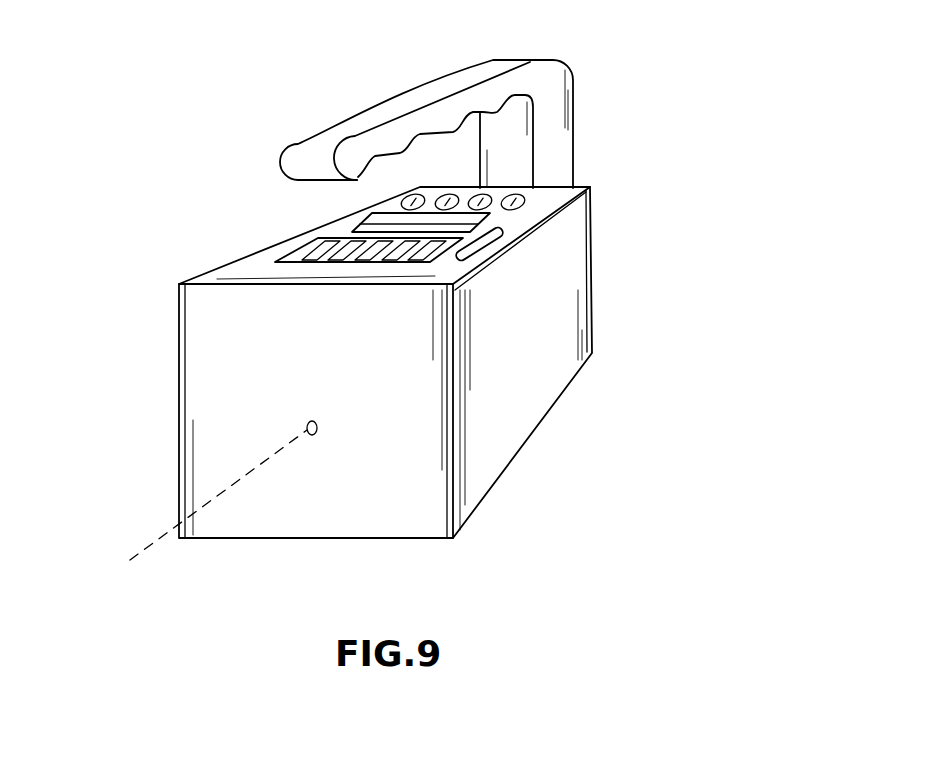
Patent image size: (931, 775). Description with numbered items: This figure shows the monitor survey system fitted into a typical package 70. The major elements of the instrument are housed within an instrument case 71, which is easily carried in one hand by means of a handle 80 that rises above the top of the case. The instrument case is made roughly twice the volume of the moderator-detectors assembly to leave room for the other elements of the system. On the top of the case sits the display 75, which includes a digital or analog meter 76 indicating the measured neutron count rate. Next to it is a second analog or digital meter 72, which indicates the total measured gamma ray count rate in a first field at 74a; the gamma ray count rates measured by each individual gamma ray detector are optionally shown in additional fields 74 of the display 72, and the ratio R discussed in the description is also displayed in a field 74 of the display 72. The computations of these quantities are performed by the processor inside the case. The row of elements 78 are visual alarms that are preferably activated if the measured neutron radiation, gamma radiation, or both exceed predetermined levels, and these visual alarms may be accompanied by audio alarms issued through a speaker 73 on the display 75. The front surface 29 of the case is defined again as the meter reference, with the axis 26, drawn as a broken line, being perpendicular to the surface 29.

The package 70 is at (616, 181).
The instrument case 71 is at (570, 257).
The second analog or digital meter 72 is at (293, 252).
The speaker 73 is at (481, 245).
The additional fields 74 is at (400, 262).
The first field 74a is at (282, 263).
The display 75 is at (377, 211).
The digital or analog meter 76 is at (361, 225).
The visual alarms 78 is at (513, 195).
The handle 80 is at (557, 110).
The surface 29 is at (225, 418).
The axis 26 is at (153, 540).